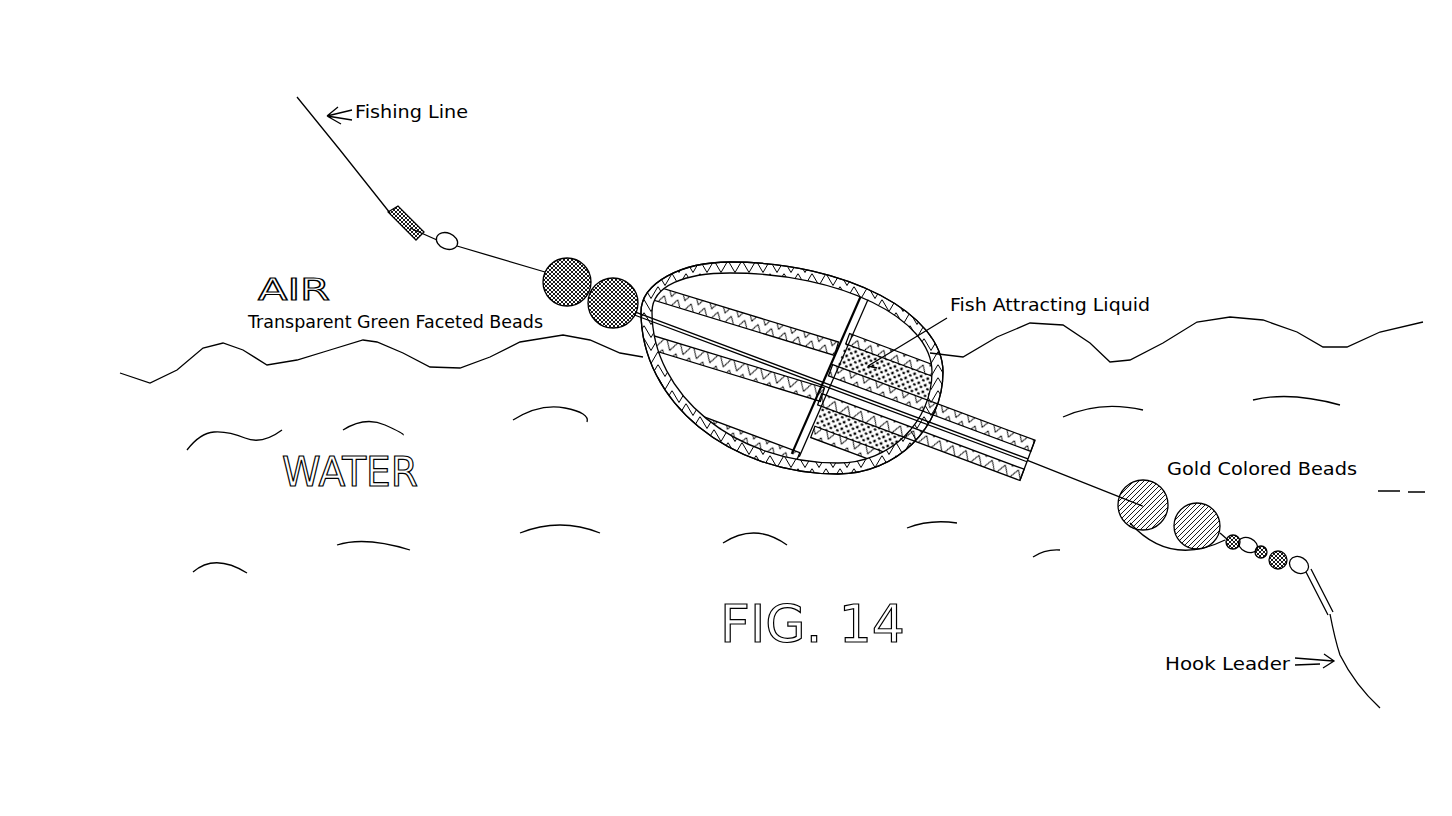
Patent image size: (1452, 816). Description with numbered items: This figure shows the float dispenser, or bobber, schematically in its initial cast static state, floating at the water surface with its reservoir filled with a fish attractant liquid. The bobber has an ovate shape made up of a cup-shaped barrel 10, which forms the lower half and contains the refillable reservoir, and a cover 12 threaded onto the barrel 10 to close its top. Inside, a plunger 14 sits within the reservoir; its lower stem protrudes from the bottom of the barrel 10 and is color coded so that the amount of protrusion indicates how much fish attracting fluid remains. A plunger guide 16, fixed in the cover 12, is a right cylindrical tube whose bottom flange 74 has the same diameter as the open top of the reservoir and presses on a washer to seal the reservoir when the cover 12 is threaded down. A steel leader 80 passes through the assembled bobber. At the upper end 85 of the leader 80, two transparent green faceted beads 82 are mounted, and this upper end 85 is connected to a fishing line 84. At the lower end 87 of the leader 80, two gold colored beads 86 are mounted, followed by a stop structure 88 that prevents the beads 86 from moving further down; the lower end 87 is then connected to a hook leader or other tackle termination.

The barrel 10 is at (883, 310).
The cover 12 is at (770, 267).
The plunger 14 is at (970, 420).
The plunger guide 16 is at (733, 378).
The flange 74 is at (828, 336).
The steel leader 80 is at (507, 260).
The transparent green faceted beads 82 is at (563, 257).
The fishing line 84 is at (407, 207).
The upper end 85 is at (424, 226).
The gold colored beads 86 is at (1137, 530).
The lower end 87 is at (1290, 546).
The stop structure 88 is at (1227, 543).